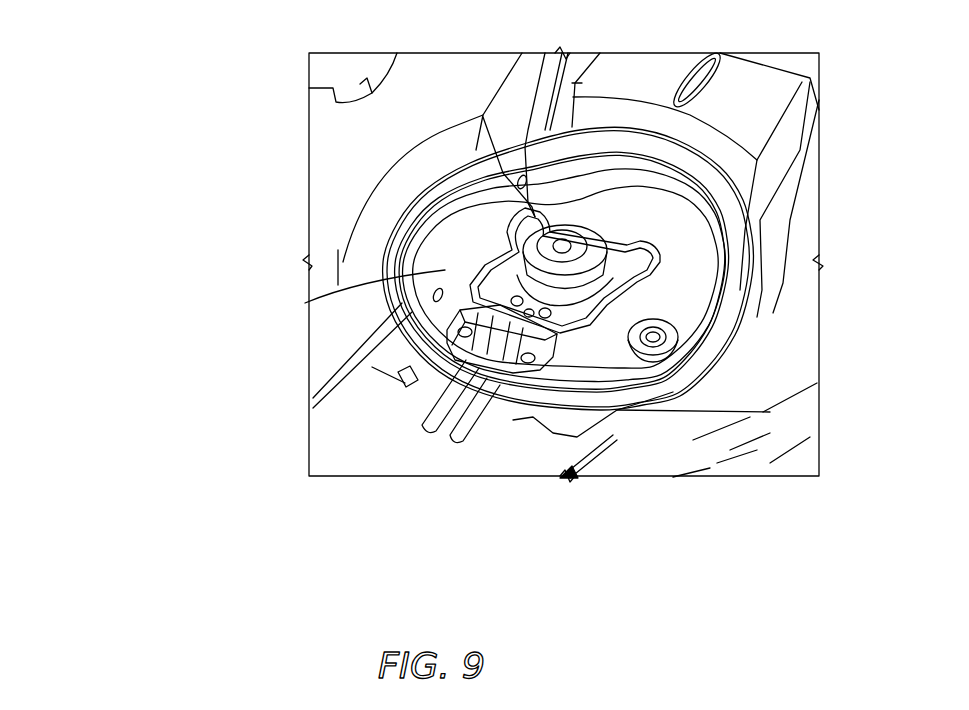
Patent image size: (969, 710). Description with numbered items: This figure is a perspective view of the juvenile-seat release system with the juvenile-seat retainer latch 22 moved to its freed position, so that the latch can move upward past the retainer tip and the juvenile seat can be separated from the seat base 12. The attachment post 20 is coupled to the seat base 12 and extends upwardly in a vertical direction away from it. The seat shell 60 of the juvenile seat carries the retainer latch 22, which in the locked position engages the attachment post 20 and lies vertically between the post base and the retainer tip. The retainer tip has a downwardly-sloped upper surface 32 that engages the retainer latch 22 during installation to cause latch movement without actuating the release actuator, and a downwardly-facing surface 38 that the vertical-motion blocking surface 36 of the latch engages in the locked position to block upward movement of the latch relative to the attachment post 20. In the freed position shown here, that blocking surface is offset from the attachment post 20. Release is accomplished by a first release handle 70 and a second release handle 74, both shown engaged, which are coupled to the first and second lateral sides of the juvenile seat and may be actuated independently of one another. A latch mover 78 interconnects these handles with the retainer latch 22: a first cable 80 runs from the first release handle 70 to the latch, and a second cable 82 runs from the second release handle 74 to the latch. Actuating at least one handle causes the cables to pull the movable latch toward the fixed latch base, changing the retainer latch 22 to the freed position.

The seat base 12 is at (820, 42).
The seat shell 60 is at (537, 212).
The attachment post 20 is at (475, 268).
The downwardly-sloped upper surface 32 is at (642, 242).
The downwardly-facing surface 38 is at (592, 297).
The juvenile-seat retainer latch 22 is at (580, 322).
The vertical-motion blocking surface 36 is at (447, 276).
The second release handle 74 is at (432, 427).
The second cable 82 is at (430, 420).
The first release handle 70 is at (457, 438).
The first cable 80 is at (486, 432).
The latch mover 78 is at (520, 421).